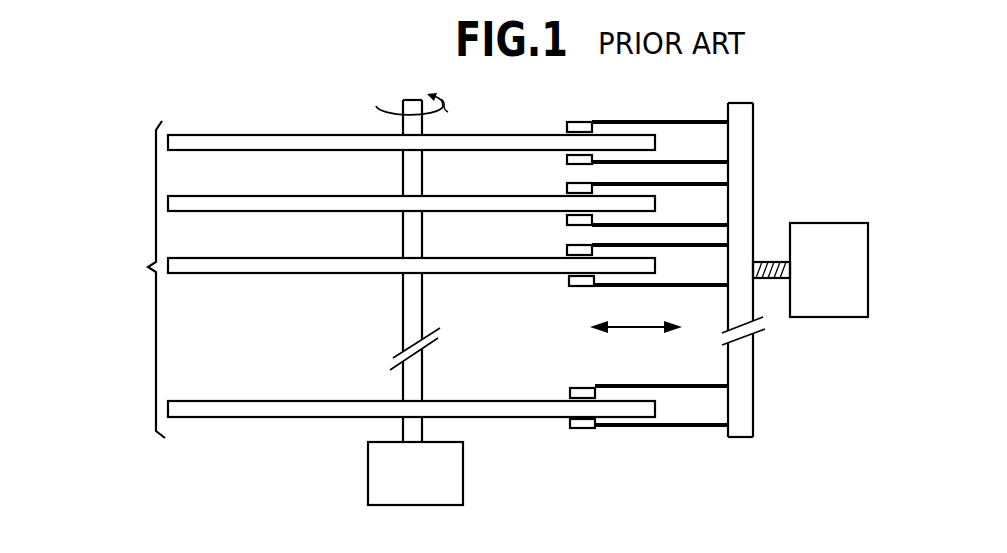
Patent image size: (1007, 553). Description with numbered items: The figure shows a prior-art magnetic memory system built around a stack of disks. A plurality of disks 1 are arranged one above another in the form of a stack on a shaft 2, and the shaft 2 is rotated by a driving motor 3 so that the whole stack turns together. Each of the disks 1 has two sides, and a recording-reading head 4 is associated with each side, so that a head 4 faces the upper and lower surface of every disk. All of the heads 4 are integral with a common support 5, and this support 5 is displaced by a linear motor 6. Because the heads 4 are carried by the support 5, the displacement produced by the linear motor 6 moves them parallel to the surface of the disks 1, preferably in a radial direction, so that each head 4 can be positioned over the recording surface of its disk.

The disks 1 is at (338, 279).
The shaft 2 is at (423, 368).
The driving motor 3 is at (510, 490).
The recording-reading head 4 is at (567, 127).
The support 5 is at (745, 188).
The linear motor 6 is at (830, 223).